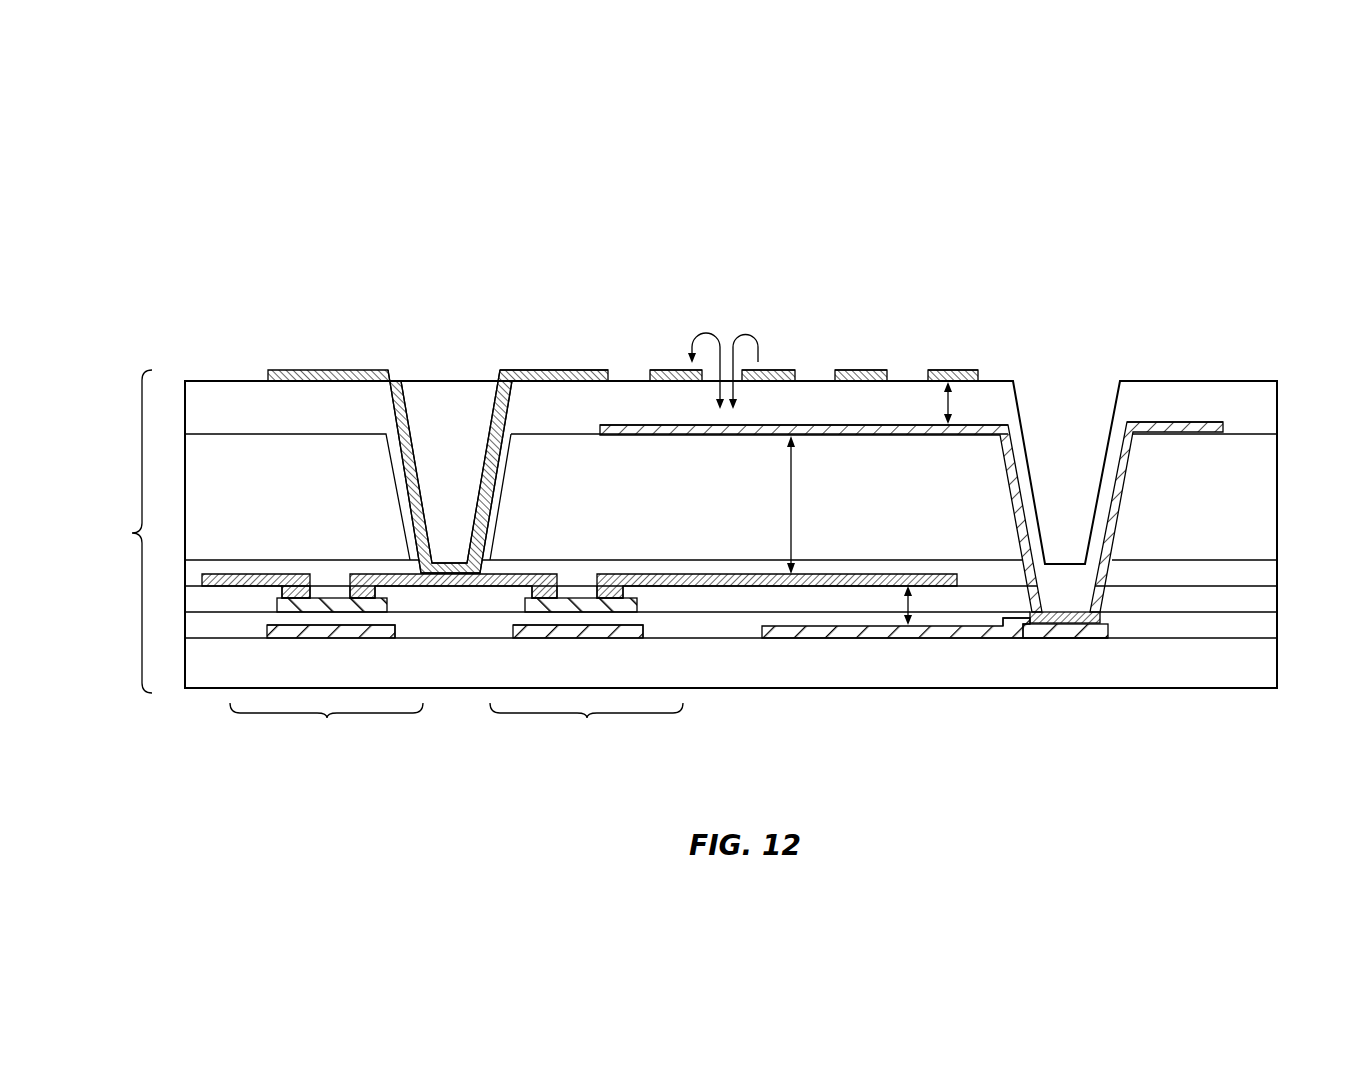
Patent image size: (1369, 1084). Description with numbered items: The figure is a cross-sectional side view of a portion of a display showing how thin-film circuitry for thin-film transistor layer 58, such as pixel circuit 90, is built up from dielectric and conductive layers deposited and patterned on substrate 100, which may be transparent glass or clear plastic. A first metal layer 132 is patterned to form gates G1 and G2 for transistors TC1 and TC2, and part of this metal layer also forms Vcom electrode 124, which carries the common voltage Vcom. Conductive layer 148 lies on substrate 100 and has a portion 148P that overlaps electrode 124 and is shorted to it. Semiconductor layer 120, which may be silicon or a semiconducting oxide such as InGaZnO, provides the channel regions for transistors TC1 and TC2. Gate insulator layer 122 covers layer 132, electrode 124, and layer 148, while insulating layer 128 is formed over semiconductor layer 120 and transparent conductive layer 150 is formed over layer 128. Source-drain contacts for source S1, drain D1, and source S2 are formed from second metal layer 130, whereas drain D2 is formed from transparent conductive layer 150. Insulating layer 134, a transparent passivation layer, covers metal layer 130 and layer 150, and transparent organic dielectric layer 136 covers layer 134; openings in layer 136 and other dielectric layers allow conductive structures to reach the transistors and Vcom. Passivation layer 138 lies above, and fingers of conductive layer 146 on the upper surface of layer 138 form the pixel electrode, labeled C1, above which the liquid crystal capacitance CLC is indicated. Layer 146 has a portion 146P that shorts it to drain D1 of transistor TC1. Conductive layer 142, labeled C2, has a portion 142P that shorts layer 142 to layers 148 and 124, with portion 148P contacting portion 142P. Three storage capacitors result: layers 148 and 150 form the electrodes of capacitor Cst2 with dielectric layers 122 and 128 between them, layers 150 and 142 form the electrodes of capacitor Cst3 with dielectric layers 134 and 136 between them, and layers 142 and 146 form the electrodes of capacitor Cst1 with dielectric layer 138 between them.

The pixel circuit 90 is at (1032, 196).
The thin-film transistor layer 58 is at (128, 531).
The substrate 100 is at (1073, 680).
The gate insulator layer 122 is at (1270, 622).
The insulating layer 128 is at (1270, 595).
The insulating layer 134 is at (1270, 567).
The dielectric layer 136 is at (1270, 472).
The passivation layer 138 is at (1270, 401).
The conductive layer 146 is at (516, 369).
The portion of layer 146 146P is at (424, 510).
The conductive layer 142 is at (872, 436).
The portion of layer 142 142P is at (1105, 592).
The second metal layer 130 is at (243, 573).
The transparent conductive layer 150 is at (686, 573).
The semiconductor layer 120 is at (523, 607).
The first metal layer 132 is at (338, 634).
The conductive layer 148 is at (855, 631).
The portion of layer 148 148P is at (1107, 618).
The Vcom electrode 124 is at (1042, 632).
The source S1 is at (297, 573).
The drain D1 is at (365, 573).
The source S2 is at (543, 573).
The drain D2 is at (606, 573).
The gate G1 is at (395, 632).
The gate G2 is at (643, 632).
The capacitor terminal C1 is at (542, 369).
The capacitor terminal C2 is at (970, 437).
The capacitor Cst1 is at (968, 403).
The capacitor Cst2 is at (928, 605).
The capacitor Cst3 is at (811, 505).
The liquid crystal capacitance CLC is at (723, 357).
The common voltage Vcom is at (1083, 640).
The transistor TC1 is at (326, 724).
The transistor TC2 is at (586, 724).